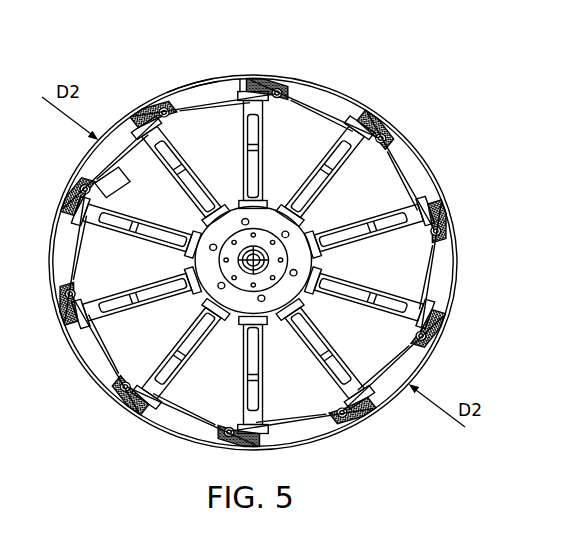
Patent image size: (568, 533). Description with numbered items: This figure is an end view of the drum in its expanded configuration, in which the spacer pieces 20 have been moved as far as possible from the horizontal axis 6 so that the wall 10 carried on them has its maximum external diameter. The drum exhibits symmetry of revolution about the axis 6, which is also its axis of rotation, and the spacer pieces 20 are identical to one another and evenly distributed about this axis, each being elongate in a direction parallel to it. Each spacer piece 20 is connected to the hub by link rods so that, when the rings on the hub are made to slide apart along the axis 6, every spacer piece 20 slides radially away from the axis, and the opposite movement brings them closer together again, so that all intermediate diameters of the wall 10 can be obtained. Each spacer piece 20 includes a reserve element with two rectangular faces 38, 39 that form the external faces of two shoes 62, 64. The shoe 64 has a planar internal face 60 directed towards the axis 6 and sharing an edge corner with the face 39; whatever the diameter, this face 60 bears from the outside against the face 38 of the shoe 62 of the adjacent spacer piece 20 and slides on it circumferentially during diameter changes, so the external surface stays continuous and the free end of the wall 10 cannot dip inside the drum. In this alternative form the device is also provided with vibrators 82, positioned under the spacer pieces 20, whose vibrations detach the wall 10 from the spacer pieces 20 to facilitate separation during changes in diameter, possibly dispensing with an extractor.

The horizontal axis 6 is at (254, 260).
The wall 10 is at (297, 91).
The spacer piece 20 is at (126, 125).
The face 38 is at (232, 80).
The face 39 is at (202, 80).
The planar internal face 60 is at (197, 122).
The shoe 62 is at (337, 110).
The shoe 64 is at (187, 85).
The vibrator 82 is at (123, 182).